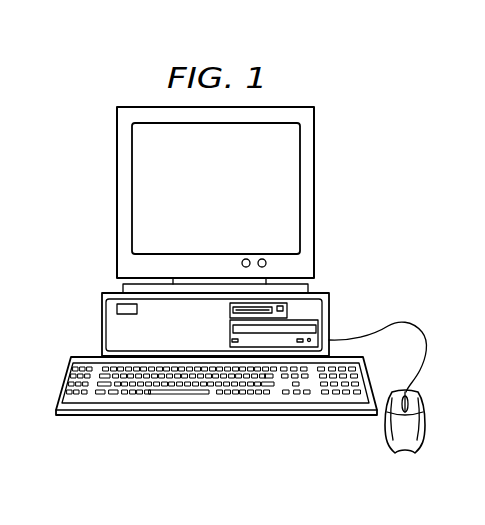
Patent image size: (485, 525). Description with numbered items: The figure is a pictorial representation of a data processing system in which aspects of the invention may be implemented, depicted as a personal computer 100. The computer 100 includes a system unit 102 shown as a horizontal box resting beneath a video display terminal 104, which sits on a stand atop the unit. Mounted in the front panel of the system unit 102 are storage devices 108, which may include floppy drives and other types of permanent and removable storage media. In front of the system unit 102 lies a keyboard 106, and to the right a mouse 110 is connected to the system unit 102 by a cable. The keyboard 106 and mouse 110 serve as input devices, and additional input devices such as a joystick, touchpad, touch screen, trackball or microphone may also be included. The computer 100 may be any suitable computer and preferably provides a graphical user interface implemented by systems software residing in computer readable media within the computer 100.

The computer 100 is at (93, 63).
The system unit 102 is at (102, 327).
The video display terminal 104 is at (314, 193).
The keyboard 106 is at (215, 415).
The storage devices 108 is at (283, 318).
The mouse 110 is at (405, 456).